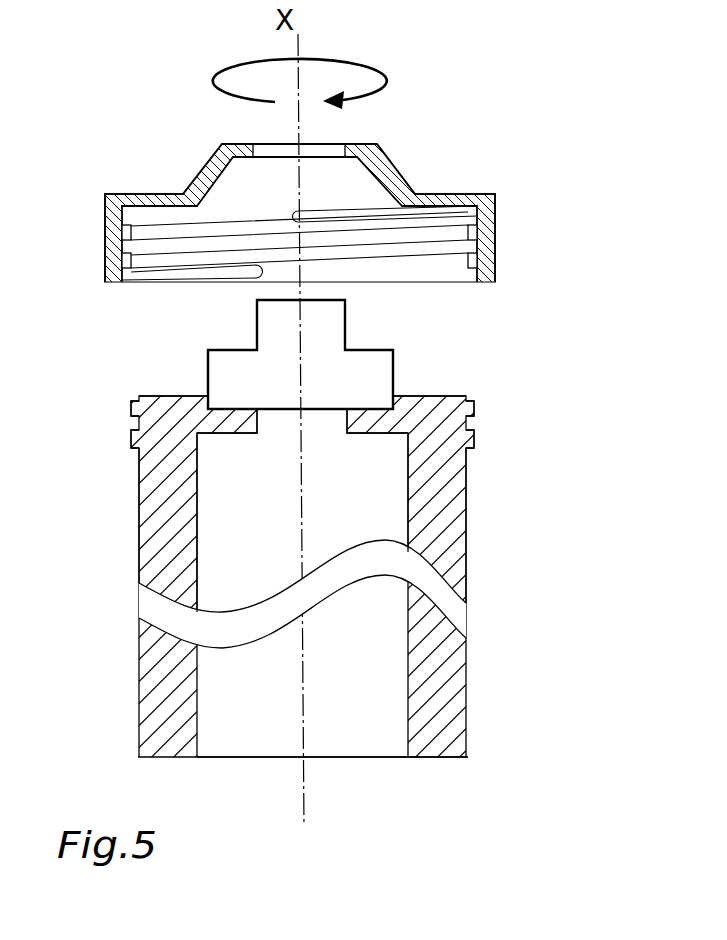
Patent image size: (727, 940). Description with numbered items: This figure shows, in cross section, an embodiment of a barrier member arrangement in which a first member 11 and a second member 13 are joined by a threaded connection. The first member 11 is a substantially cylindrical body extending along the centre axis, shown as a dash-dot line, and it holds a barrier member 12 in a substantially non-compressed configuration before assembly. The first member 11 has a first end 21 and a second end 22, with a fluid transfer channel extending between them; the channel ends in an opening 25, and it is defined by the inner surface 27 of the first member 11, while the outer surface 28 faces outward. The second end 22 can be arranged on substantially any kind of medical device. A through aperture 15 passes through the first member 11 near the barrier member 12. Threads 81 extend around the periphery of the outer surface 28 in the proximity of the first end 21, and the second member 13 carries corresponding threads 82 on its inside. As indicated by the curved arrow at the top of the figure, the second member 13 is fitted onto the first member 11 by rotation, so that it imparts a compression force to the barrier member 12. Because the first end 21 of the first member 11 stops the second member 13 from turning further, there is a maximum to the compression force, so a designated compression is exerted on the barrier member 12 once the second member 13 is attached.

The first member 11 is at (493, 678).
The barrier member 12 is at (229, 370).
The second member 13 is at (136, 178).
The through aperture 15 is at (310, 427).
The first end 21 is at (430, 394).
The second end 22 is at (374, 758).
The second opening 25 is at (273, 742).
The inner surface 27 is at (152, 516).
The outer surface 28 is at (446, 510).
The threads 81 is at (471, 412).
The threads 82 is at (168, 266).